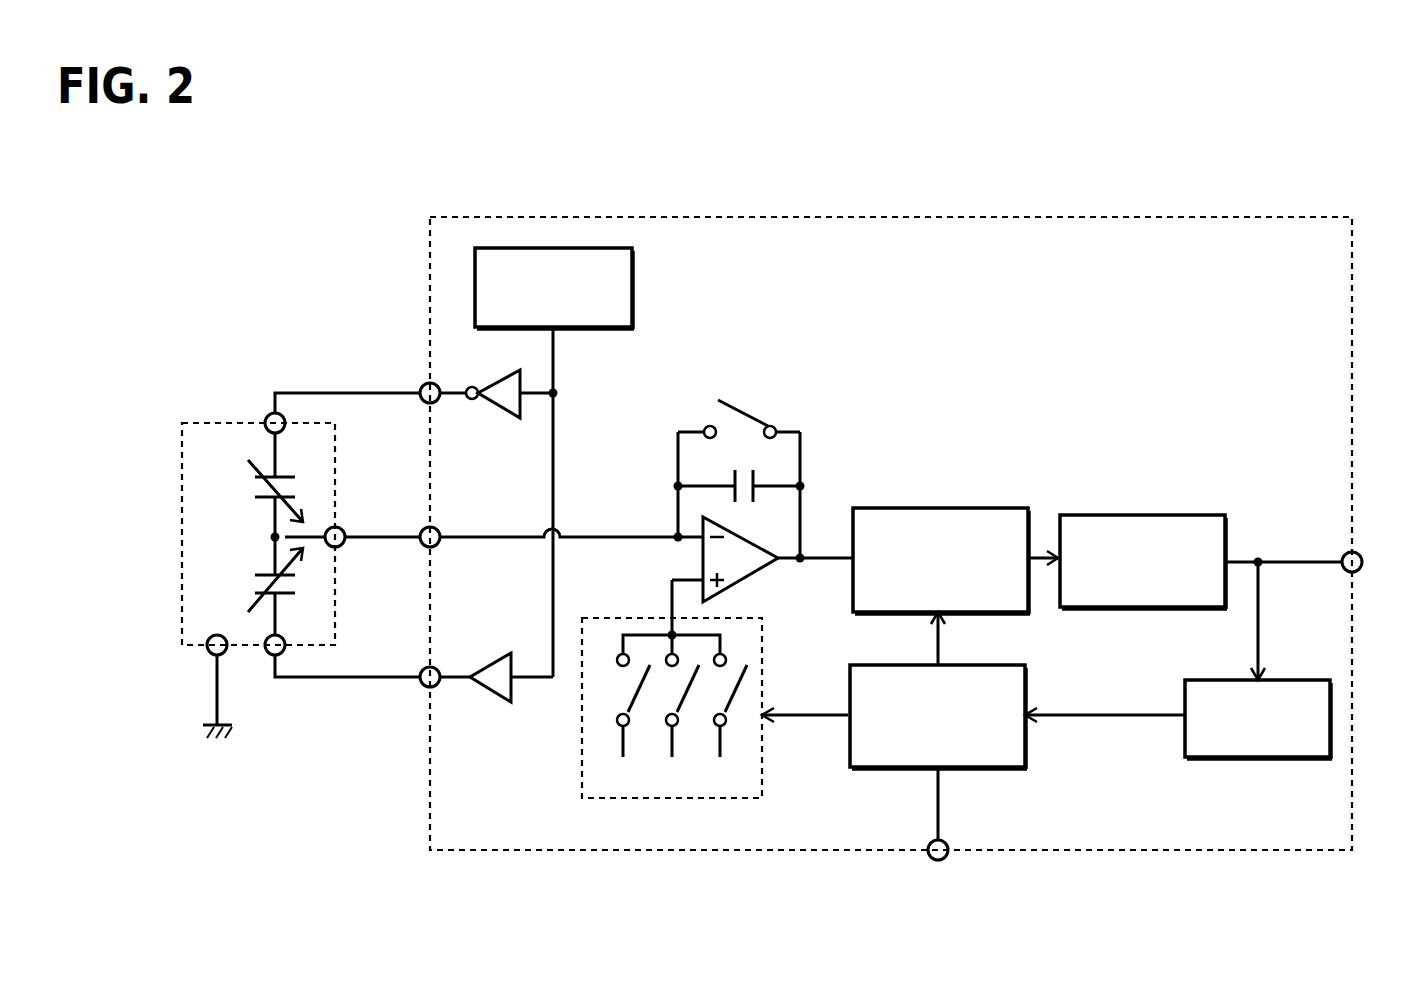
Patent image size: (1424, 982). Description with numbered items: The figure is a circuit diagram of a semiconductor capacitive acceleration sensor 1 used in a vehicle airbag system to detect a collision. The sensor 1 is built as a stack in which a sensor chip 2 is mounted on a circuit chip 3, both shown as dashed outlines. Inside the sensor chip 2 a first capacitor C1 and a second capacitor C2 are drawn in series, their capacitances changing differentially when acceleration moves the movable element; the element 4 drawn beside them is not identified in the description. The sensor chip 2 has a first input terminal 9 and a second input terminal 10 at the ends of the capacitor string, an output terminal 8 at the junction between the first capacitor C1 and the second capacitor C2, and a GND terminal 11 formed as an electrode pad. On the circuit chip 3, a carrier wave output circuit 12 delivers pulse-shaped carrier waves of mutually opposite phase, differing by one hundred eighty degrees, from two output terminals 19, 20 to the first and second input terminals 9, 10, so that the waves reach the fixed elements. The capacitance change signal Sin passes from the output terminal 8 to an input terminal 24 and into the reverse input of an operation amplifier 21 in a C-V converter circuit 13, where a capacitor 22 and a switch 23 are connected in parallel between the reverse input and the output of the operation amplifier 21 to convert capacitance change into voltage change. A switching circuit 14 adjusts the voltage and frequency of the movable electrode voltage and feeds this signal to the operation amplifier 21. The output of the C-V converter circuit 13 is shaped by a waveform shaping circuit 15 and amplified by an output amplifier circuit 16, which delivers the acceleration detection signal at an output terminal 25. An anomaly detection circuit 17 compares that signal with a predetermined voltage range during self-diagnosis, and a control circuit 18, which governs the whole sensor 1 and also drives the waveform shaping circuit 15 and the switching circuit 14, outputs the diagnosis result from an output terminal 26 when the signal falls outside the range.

The semiconductor capacitive acceleration sensor 1 is at (672, 195).
The sensor chip 2 is at (212, 420).
The circuit chip 3 is at (890, 217).
The movable electrode 4 is at (205, 541).
The output terminal 8 is at (336, 528).
The first input terminal 9 is at (273, 414).
The second input terminal 10 is at (267, 656).
The GND terminal 11 is at (208, 656).
The carrier wave output circuit 12 is at (553, 248).
The C-V converter circuit 13 is at (800, 413).
The switching circuit 14 is at (582, 770).
The waveform shaping circuit 15 is at (940, 508).
The output amplifier circuit 16 is at (1143, 515).
The anomaly detection circuit 17 is at (1255, 758).
The control circuit 18 is at (988, 768).
The output terminal 19 is at (425, 383).
The output terminal 20 is at (425, 668).
The operation amplifier 21 is at (742, 582).
The capacitor 22 is at (755, 475).
The switch 23 is at (742, 411).
The input terminal 24 is at (438, 545).
The output terminal 25 is at (1358, 555).
The output terminal 26 is at (928, 858).
The first capacitor C1 is at (258, 498).
The second capacitor C2 is at (258, 573).